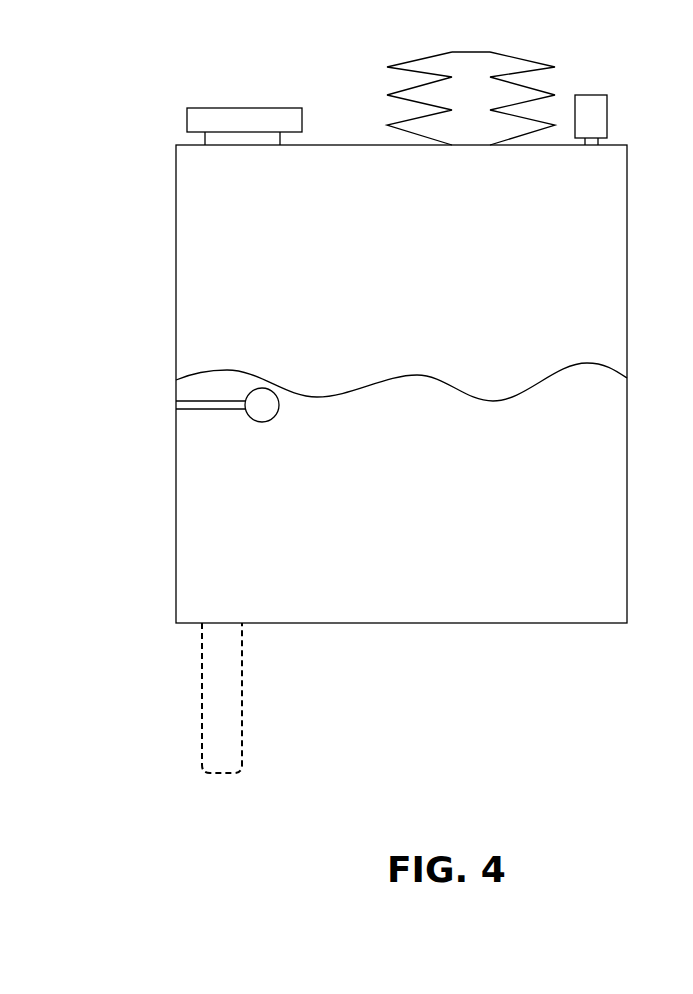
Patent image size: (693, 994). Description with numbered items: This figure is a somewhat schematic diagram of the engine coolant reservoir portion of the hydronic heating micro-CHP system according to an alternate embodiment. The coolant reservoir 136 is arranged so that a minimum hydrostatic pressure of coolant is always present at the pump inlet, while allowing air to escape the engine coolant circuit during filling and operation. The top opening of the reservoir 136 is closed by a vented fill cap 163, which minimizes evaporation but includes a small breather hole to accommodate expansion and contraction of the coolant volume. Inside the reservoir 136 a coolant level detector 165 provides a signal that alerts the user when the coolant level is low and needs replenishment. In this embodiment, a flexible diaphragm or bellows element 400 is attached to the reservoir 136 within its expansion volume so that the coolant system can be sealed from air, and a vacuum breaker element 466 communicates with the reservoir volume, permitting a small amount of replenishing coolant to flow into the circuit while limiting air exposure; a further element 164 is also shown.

The coolant reservoir 136 is at (163, 288).
The fill cap 163 is at (226, 100).
The diaphragm or bellows element 400 is at (442, 44).
The vacuum breaker element 466 is at (618, 91).
The coolant level detector 165 is at (200, 420).
The outlet pipe 164 is at (250, 738).